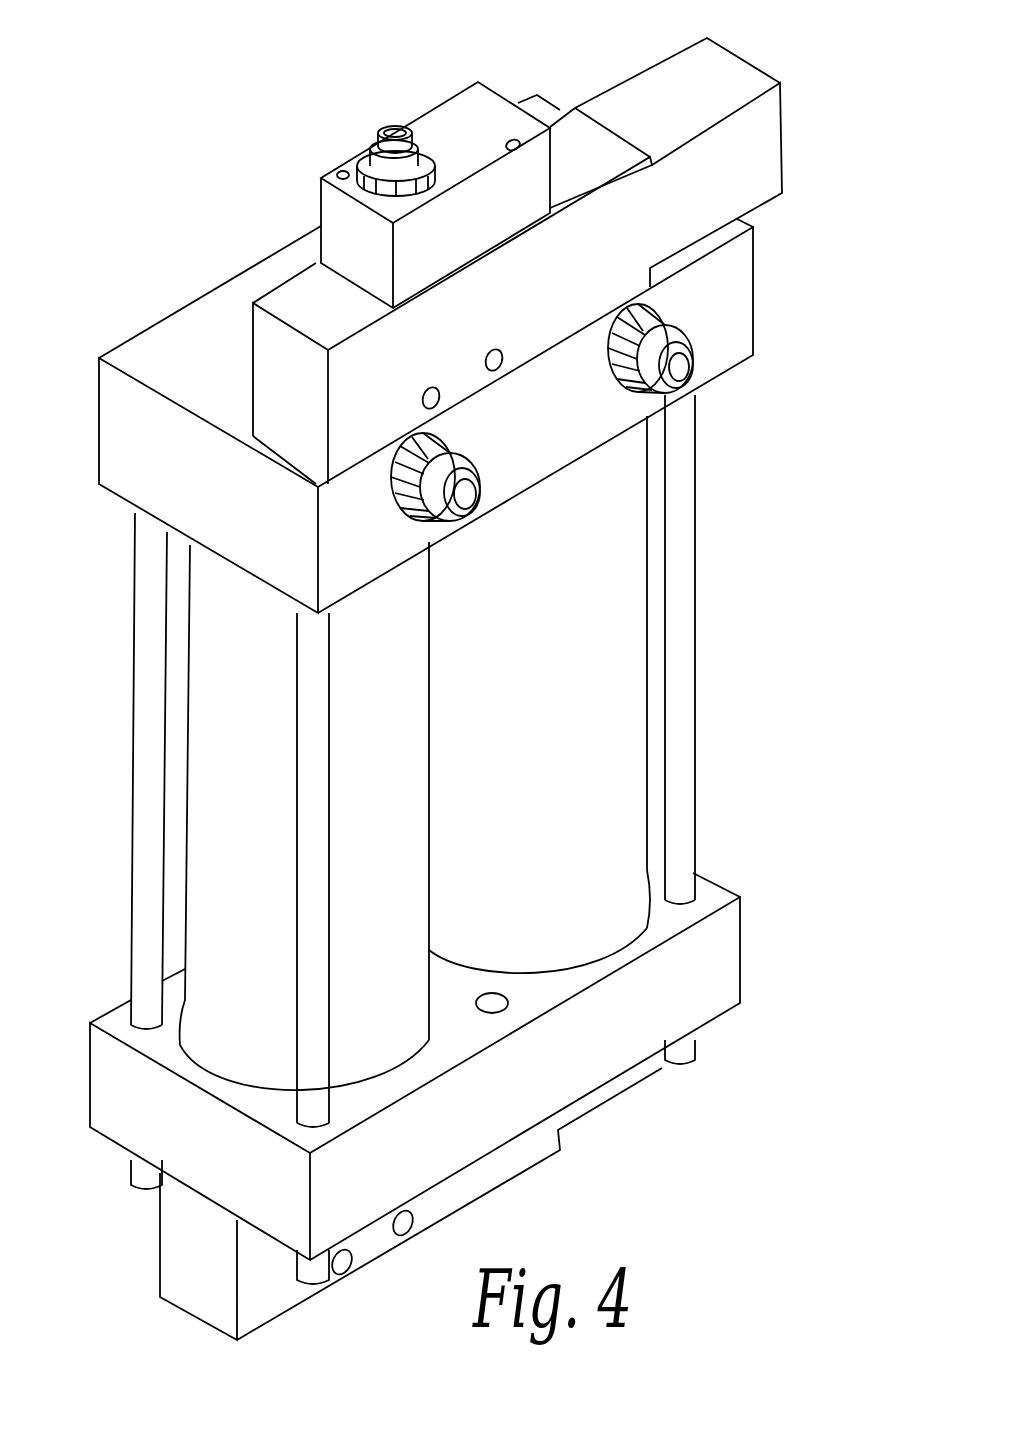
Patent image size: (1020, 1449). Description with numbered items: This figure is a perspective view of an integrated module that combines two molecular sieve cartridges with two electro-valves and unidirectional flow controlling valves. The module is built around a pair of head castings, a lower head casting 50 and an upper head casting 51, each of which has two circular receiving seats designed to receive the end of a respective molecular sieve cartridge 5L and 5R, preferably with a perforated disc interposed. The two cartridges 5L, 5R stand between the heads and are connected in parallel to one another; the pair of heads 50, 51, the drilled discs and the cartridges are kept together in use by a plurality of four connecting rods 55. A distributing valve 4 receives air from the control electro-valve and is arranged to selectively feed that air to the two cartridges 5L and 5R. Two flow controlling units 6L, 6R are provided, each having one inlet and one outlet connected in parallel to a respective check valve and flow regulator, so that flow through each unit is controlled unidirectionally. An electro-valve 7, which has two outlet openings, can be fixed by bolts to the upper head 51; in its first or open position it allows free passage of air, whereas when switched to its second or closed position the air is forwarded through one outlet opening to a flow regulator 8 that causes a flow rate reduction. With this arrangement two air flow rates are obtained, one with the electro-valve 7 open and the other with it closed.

The distributing valve 4 is at (523, 1173).
The molecular sieve cartridge 5L is at (397, 839).
The molecular sieve cartridge 5R is at (590, 729).
The flow controlling unit 6L is at (481, 492).
The flow controlling unit 6R is at (694, 366).
The electro-valve 7 is at (637, 78).
The flow regulator 8 is at (370, 148).
The lower head casting 50 is at (732, 957).
The upper head casting 51 is at (100, 486).
The connecting rods 55 is at (303, 697).